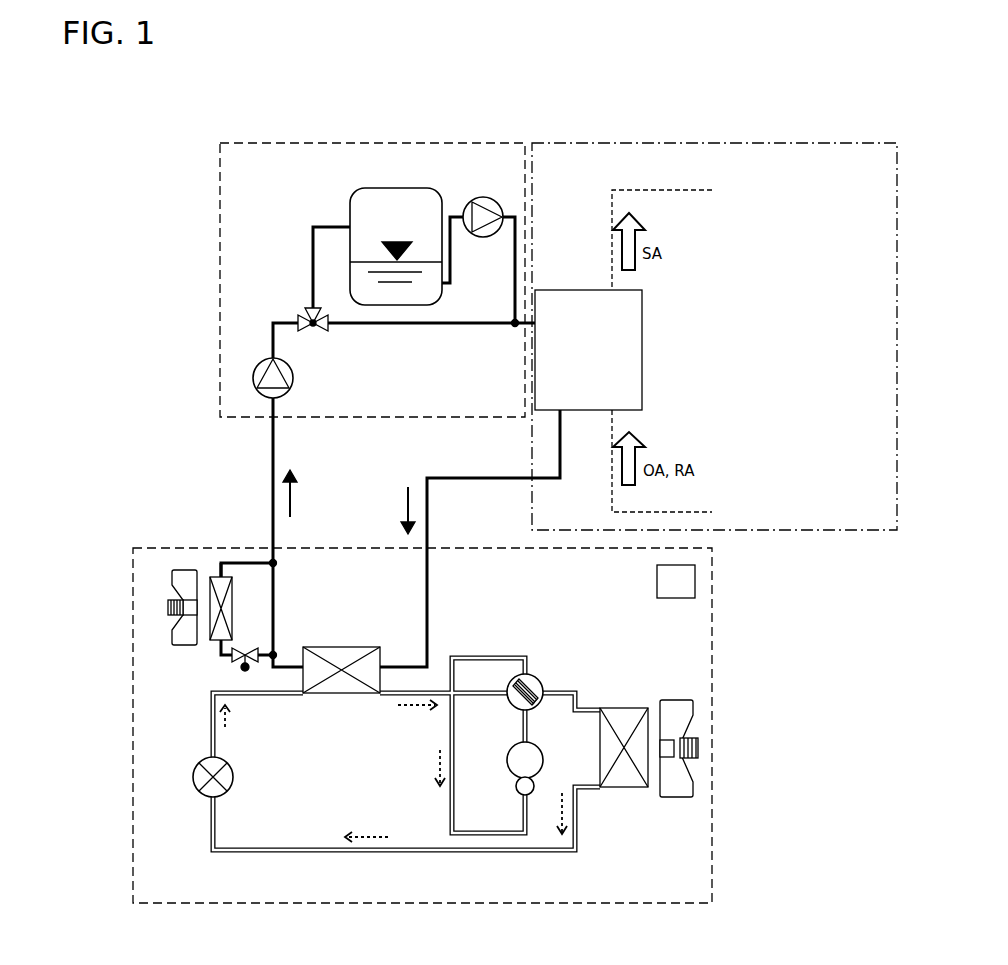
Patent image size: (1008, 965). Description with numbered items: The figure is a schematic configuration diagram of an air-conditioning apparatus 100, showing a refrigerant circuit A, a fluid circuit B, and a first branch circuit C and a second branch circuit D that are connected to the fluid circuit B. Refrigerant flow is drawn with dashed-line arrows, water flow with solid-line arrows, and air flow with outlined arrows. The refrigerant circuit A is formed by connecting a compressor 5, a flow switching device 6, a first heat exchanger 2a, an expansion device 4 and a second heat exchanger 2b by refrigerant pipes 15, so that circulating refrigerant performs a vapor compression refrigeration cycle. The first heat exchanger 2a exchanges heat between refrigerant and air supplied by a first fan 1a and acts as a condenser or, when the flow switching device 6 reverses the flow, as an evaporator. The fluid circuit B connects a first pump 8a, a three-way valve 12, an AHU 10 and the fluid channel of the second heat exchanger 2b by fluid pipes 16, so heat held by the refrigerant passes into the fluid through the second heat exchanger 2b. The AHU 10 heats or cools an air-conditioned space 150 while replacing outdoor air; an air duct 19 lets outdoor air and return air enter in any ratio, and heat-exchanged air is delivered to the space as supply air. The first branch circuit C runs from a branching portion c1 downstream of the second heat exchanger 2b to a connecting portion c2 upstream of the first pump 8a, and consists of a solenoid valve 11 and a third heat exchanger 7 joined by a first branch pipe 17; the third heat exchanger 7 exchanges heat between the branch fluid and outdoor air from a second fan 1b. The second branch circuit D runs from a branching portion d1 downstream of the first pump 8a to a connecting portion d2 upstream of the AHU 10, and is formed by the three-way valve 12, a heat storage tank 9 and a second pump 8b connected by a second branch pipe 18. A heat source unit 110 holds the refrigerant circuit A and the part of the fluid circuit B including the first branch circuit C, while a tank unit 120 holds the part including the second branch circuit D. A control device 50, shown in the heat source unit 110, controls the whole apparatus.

The air-conditioning apparatus 100 is at (162, 421).
The heat source unit 110 is at (153, 547).
The tank unit 120 is at (218, 237).
The air-conditioned space 150 is at (815, 531).
The air duct 19 is at (680, 191).
The AHU 10 is at (642, 345).
The heat storage tank 9 is at (446, 214).
The first pump 8a is at (293, 383).
The second pump 8b is at (483, 238).
The three-way valve 12 is at (305, 318).
The second branch pipe 18 is at (313, 245).
The fluid pipes 16 is at (276, 437).
The control device 50 is at (695, 580).
The third heat exchanger 7 is at (214, 577).
The first branch pipe 17 is at (221, 562).
The solenoid valve 11 is at (232, 660).
The second fan 1b is at (175, 647).
The first fan 1a is at (683, 700).
The first heat exchanger 2a is at (622, 788).
The second heat exchanger 2b is at (345, 694).
The expansion device 4 is at (235, 777).
The compressor 5 is at (507, 758).
The flow switching device 6 is at (541, 681).
The refrigerant pipes 15 is at (310, 849).
The second branch circuit D is at (326, 219).
The refrigerant circuit A is at (511, 651).
The fluid circuit B is at (456, 487).
The first branch circuit C is at (210, 656).
The branching portion d1 is at (318, 330).
The connecting portion d2 is at (513, 330).
The branching portion c1 is at (277, 654).
The connecting portion c2 is at (277, 566).